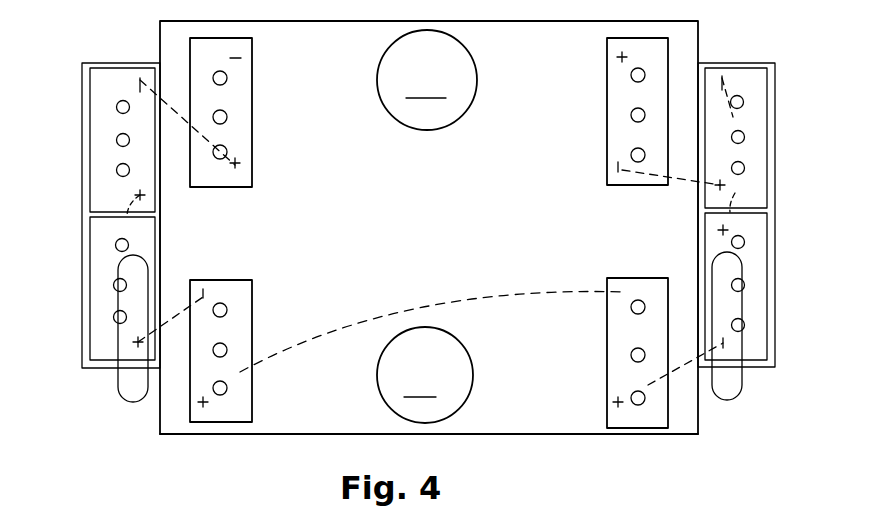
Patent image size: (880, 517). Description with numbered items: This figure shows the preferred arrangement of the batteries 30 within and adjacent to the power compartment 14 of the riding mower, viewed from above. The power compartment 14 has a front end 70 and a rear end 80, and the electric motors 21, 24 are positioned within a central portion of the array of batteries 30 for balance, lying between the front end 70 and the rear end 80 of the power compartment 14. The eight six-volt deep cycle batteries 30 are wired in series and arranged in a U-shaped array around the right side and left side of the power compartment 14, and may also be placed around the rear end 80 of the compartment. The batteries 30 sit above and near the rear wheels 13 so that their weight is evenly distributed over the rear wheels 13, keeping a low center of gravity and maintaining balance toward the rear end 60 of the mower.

The rear wheels 13 is at (130, 382).
The power compartment 14 is at (590, 437).
The electric motor 21 is at (425, 375).
The electric motor 24 is at (427, 80).
The batteries 30 is at (145, 173).
The rear end 60 is at (154, 452).
The front end 70 is at (317, 23).
The rear end 80 is at (535, 435).